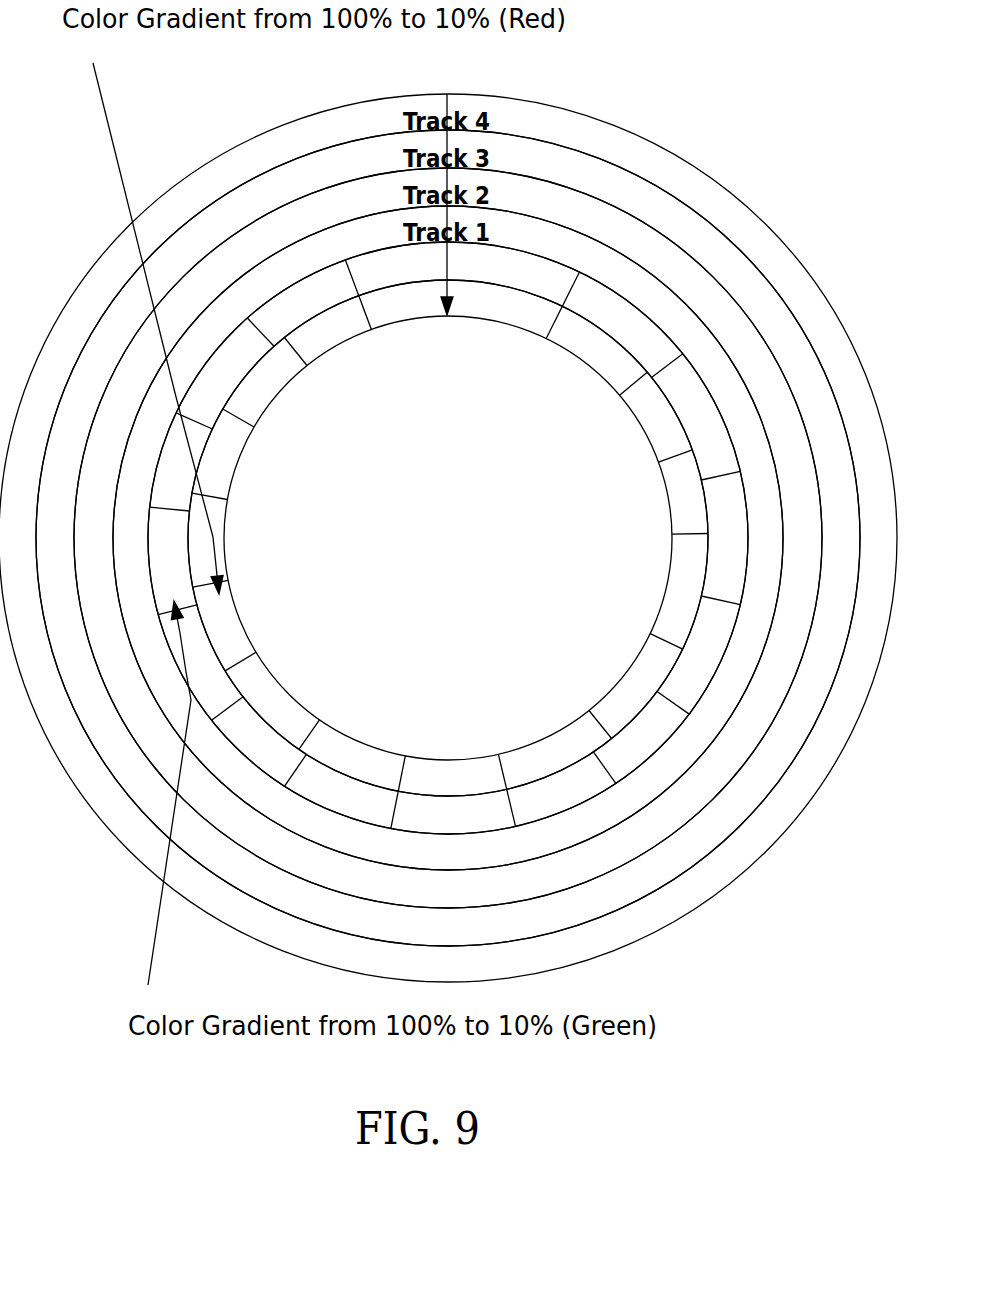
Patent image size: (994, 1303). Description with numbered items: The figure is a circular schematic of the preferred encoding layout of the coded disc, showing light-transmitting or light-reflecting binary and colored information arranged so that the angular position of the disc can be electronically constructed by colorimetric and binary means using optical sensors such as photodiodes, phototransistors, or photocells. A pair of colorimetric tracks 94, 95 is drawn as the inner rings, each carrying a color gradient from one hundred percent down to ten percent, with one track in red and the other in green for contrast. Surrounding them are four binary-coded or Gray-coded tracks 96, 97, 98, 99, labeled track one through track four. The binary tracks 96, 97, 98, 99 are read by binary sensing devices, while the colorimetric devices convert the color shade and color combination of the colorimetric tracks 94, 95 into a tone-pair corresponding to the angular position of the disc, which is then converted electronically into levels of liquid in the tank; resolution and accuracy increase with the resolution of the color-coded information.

The colorimetric track 94 is at (589, 348).
The colorimetric track 95 is at (681, 400).
The binary-coded track 96 is at (755, 488).
The binary-coded track 97 is at (790, 583).
The binary-coded track 98 is at (790, 697).
The binary-coded track 99 is at (781, 791).